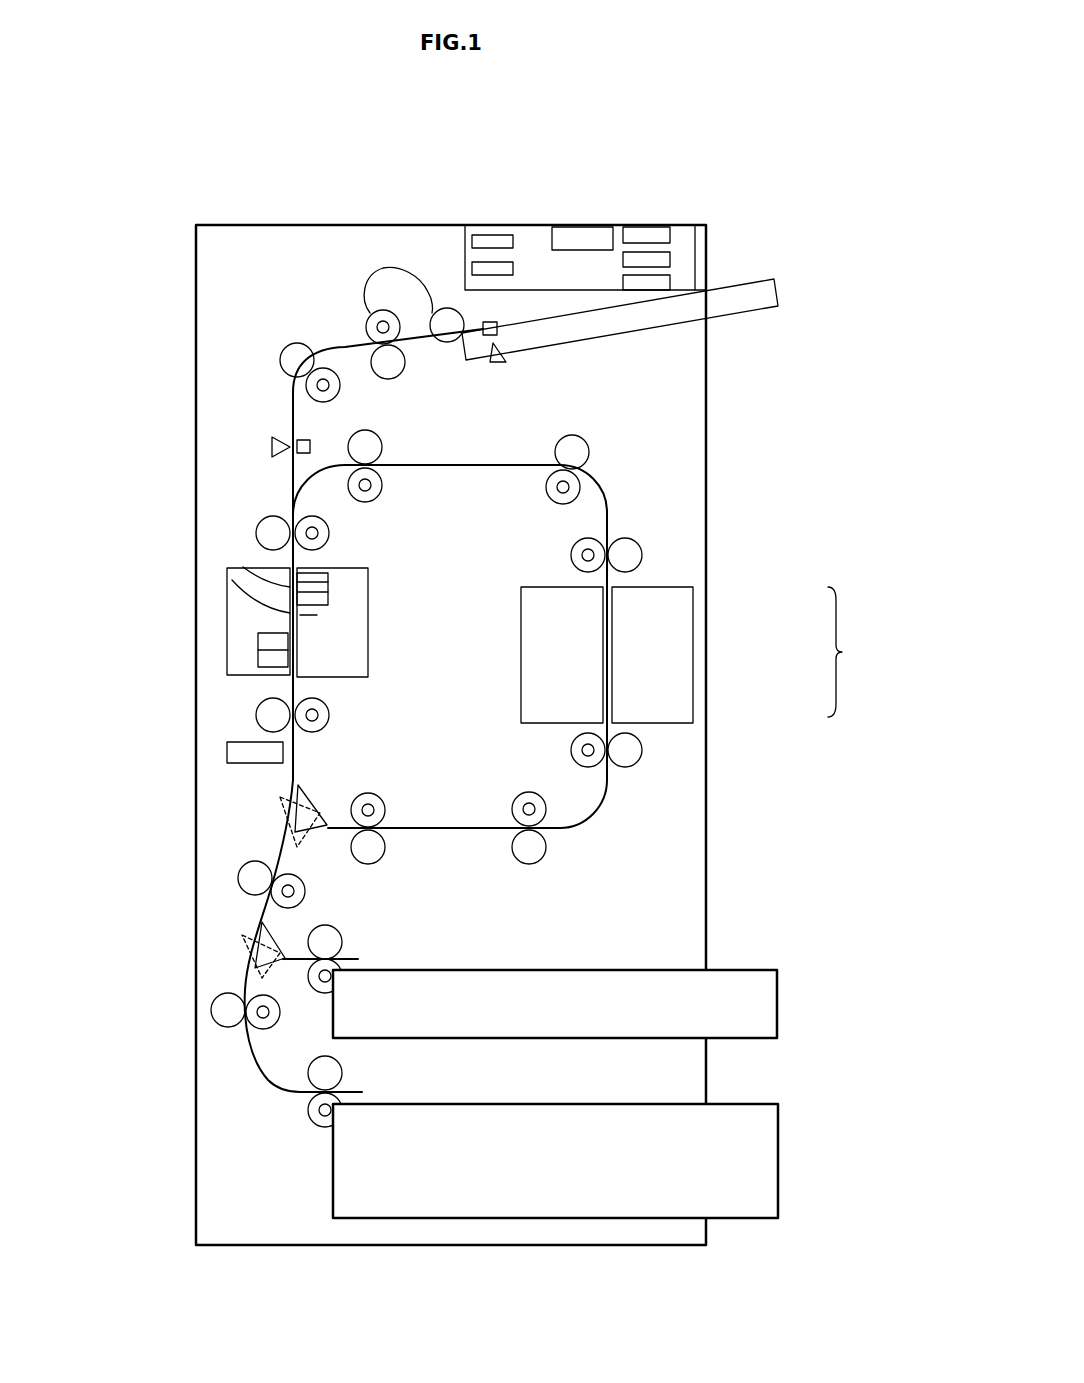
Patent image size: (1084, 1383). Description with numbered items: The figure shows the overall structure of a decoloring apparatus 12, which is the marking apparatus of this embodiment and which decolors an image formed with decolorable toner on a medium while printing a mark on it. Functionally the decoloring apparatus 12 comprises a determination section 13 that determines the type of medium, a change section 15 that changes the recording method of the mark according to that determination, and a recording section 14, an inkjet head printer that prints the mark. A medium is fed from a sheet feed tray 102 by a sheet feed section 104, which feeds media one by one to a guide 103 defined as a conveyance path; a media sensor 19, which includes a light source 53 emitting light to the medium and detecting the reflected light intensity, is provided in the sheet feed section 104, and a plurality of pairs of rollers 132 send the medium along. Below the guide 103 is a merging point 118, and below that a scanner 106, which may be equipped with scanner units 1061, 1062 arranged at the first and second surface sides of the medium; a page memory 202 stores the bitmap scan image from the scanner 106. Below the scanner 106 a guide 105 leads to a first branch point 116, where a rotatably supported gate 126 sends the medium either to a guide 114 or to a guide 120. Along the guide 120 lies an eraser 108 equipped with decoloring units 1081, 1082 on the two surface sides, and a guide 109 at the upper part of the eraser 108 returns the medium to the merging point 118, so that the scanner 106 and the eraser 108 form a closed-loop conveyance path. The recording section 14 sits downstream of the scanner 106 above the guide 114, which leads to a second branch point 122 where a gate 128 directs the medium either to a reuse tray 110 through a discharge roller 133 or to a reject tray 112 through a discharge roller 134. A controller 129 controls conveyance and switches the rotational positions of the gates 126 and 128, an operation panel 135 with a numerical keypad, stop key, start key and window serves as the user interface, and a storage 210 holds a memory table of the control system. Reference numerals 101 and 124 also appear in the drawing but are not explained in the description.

The decoloring apparatus 12 is at (140, 203).
The determination section 13 is at (477, 240).
The recording section 14 is at (227, 752).
The change section 15 is at (472, 268).
The media sensor 19 is at (505, 353).
The light source 53 is at (480, 322).
The light source 101 is at (630, 258).
The sheet feed tray 102 is at (762, 277).
The guide 103 is at (293, 410).
The sheet feed section 104 is at (408, 308).
The guide 105 is at (293, 687).
The scanner 106 is at (253, 622).
The scanner unit 1061 is at (243, 567).
The scanner unit 1062 is at (260, 650).
The eraser 108 is at (704, 655).
The decoloring unit 1081 is at (590, 638).
The decoloring unit 1082 is at (680, 667).
The guide 109 is at (438, 467).
The reuse tray 110 is at (778, 1007).
The reject tray 112 is at (780, 1153).
The guide 114 is at (253, 907).
The first branch point 116 is at (278, 800).
The merging point 118 is at (293, 508).
The guide 120 is at (457, 828).
The second branch point 122 is at (240, 938).
The conveyance path 124 is at (287, 968).
The gate 126 is at (280, 797).
The gate 128 is at (210, 1018).
The controller 129 is at (567, 227).
The pairs of rollers 132 is at (340, 388).
The discharge roller 133 is at (330, 928).
The discharge roller 134 is at (340, 1068).
The operation panel 135 is at (684, 232).
The page memory 202 is at (630, 281).
The storage 210 is at (645, 230).